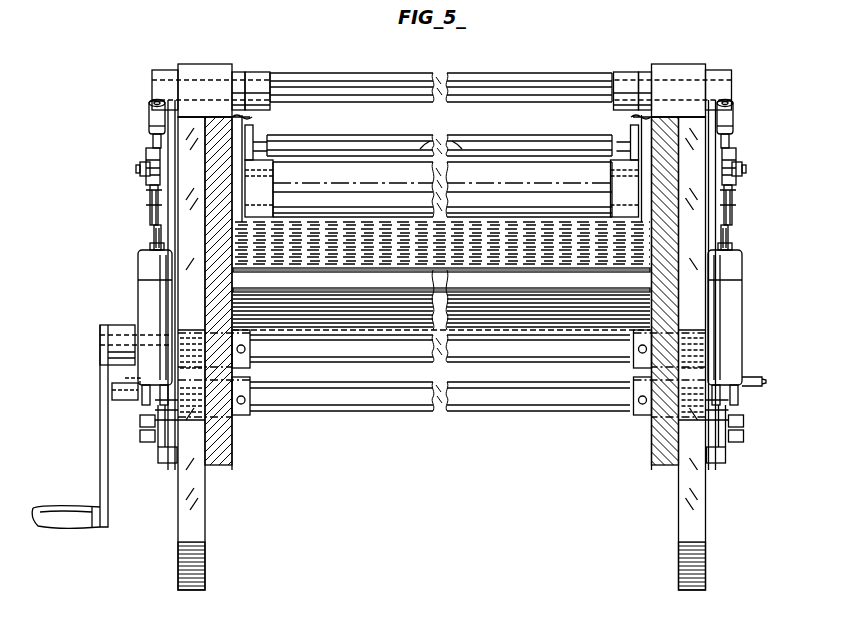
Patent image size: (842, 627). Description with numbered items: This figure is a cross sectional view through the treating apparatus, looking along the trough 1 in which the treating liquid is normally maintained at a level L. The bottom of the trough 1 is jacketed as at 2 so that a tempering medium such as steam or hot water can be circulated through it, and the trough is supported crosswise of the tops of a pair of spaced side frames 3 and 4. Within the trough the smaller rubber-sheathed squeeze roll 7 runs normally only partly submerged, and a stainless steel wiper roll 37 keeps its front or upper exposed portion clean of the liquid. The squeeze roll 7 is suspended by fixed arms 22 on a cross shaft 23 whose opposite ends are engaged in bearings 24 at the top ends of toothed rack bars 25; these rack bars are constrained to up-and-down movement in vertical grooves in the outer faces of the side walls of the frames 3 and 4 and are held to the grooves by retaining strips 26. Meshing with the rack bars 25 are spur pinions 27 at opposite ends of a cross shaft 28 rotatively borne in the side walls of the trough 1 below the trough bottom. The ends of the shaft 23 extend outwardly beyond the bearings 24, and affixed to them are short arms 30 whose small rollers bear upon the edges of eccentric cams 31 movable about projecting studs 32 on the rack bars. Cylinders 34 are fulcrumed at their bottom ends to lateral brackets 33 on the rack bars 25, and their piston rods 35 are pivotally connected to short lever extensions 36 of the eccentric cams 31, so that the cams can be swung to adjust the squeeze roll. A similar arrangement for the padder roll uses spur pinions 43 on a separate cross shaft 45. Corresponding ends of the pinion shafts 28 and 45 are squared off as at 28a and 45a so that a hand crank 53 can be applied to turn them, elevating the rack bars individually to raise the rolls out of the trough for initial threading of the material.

The trough 1 is at (240, 236).
The jacket 2 is at (463, 275).
The side frame 3 is at (660, 454).
The side frame 4 is at (224, 448).
The squeeze roll 7 is at (441, 135).
The fixed arm 22 is at (254, 118).
The cross shaft 23 is at (452, 79).
The bearing 24 is at (207, 65).
The toothed rack bar 25 is at (182, 240).
The retaining strip 26 is at (177, 127).
The spur pinion 27 is at (196, 323).
The cross shaft 28 is at (461, 352).
The squared end 28a is at (115, 344).
The short arm 30 is at (158, 88).
The eccentric cam 31 is at (155, 155).
The projecting stud 32 is at (143, 170).
The lateral bracket 33 is at (165, 450).
The cylinder 34 is at (152, 297).
The piston rod 35 is at (153, 246).
The lever extension 36 is at (152, 190).
The wiper roll 37 is at (522, 136).
The spur pinion 43 is at (655, 432).
The cross shaft 45 is at (458, 404).
The squared end 45a is at (120, 390).
The hand crank 53 is at (103, 446).
The liquid level L is at (423, 182).